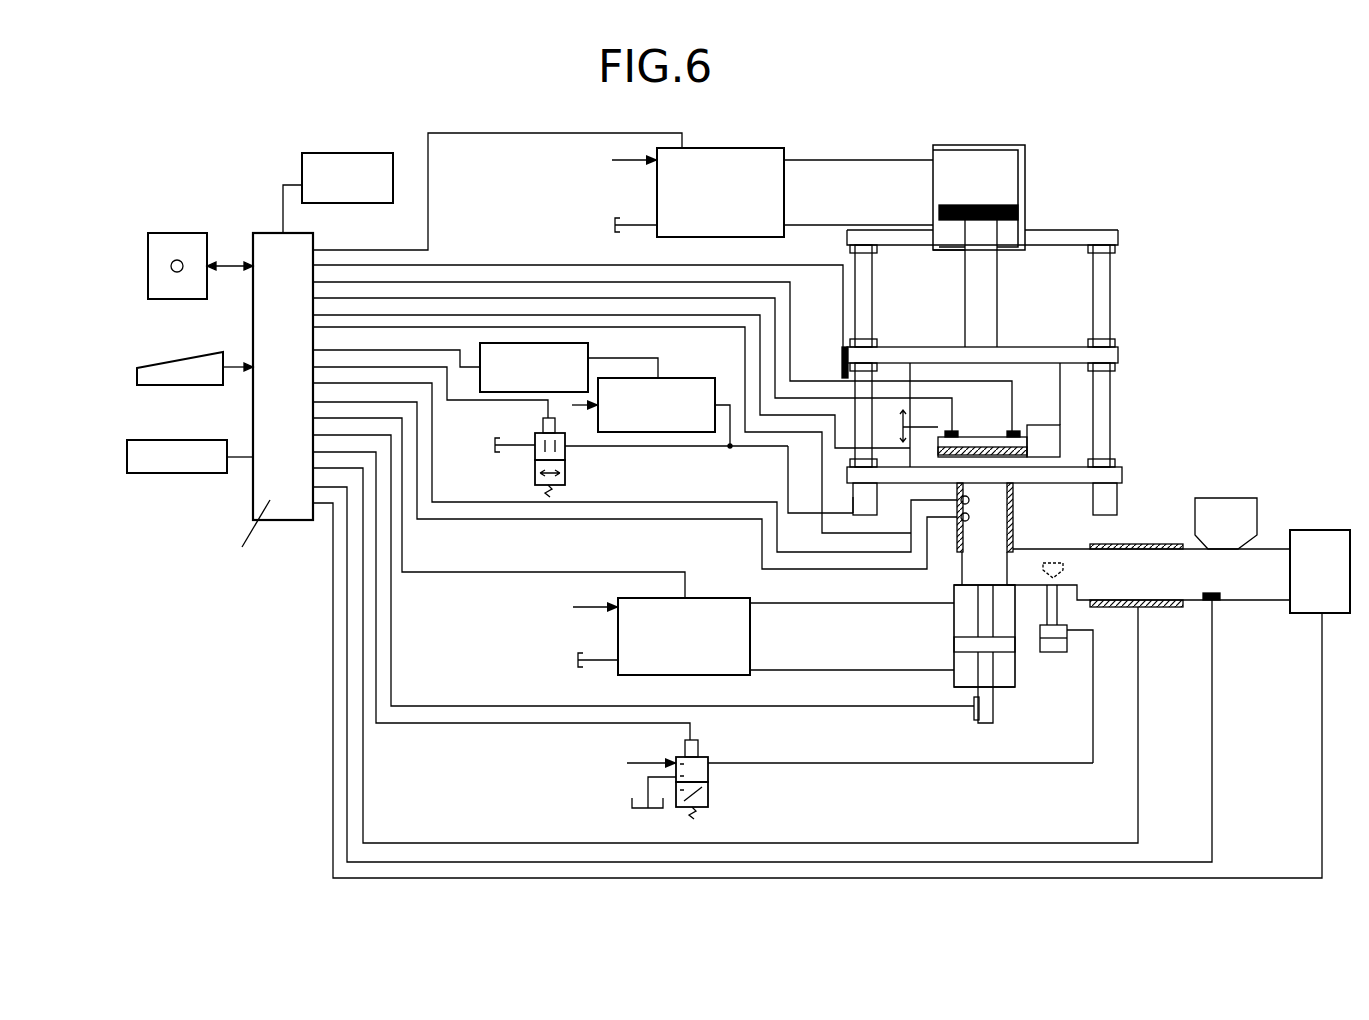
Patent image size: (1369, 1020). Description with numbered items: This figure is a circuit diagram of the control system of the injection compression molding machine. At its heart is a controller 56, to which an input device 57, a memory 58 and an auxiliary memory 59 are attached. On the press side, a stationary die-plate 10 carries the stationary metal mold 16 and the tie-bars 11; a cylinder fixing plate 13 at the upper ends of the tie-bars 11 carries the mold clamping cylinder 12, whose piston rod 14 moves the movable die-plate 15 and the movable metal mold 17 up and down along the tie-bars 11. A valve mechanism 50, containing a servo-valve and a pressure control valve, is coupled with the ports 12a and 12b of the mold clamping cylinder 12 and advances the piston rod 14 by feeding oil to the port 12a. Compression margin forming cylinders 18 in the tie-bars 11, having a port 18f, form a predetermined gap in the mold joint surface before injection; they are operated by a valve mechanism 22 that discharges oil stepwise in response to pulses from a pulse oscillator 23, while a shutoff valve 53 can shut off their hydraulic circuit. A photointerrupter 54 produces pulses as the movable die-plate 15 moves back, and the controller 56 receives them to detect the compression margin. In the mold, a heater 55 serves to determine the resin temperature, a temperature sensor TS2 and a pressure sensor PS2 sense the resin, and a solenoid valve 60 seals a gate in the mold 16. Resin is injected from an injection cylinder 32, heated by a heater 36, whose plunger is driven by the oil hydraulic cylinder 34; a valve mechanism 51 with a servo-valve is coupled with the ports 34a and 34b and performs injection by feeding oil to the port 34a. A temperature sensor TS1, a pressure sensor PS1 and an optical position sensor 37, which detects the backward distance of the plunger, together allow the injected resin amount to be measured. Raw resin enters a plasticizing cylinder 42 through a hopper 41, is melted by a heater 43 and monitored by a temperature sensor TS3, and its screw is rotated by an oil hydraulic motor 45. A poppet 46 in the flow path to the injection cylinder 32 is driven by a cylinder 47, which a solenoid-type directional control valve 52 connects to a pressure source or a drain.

The controller 56 is at (313, 240).
The auxiliary memory 59 is at (203, 233).
The input device 57 is at (140, 366).
The memory 58 is at (127, 457).
The solenoid valve 60 is at (378, 153).
The valve mechanism 50 is at (762, 148).
The pulse oscillator 23 is at (588, 356).
The valve mechanism 22 is at (700, 378).
The shutoff valve 53 is at (566, 479).
The valve mechanism 51 is at (724, 598).
The directional control valve 52 is at (708, 799).
The photointerrupter 54 is at (842, 368).
The pressure sensor PS2 is at (1016, 431).
The temperature sensor TS2 is at (970, 428).
The temperature sensor TS1 is at (970, 500).
The pressure sensor PS1 is at (970, 517).
The mold clamping cylinder 12 is at (966, 176).
The port 12a is at (933, 152).
The port 12b is at (934, 218).
The piston rod 14 is at (1000, 284).
The cylinder fixing plate 13 is at (1118, 238).
The tie-bars 11 is at (1112, 296).
The movable die-plate 15 is at (1118, 364).
The stationary die-plate 10 is at (1122, 475).
The movable metal mold 17 is at (1062, 382).
The stationary metal mold 16 is at (1062, 441).
The heater 55 is at (1030, 460).
The compression margin forming cylinder 18 is at (970, 489).
The port 18f is at (853, 512).
The heater 36 is at (960, 553).
The injection cylinder 32 is at (962, 572).
The oil hydraulic cylinder 34 is at (959, 658).
The port 34a is at (954, 668).
The port 34b is at (954, 598).
The position sensor 37 is at (974, 716).
The plasticizing cylinder 42 is at (1237, 608).
The heater 43 is at (1175, 608).
The temperature sensor TS3 is at (1214, 593).
The oil hydraulic motor 45 is at (1330, 530).
The hopper 41 is at (1250, 498).
The cylinder 47 is at (1058, 655).
The poppet 46 is at (1064, 574).